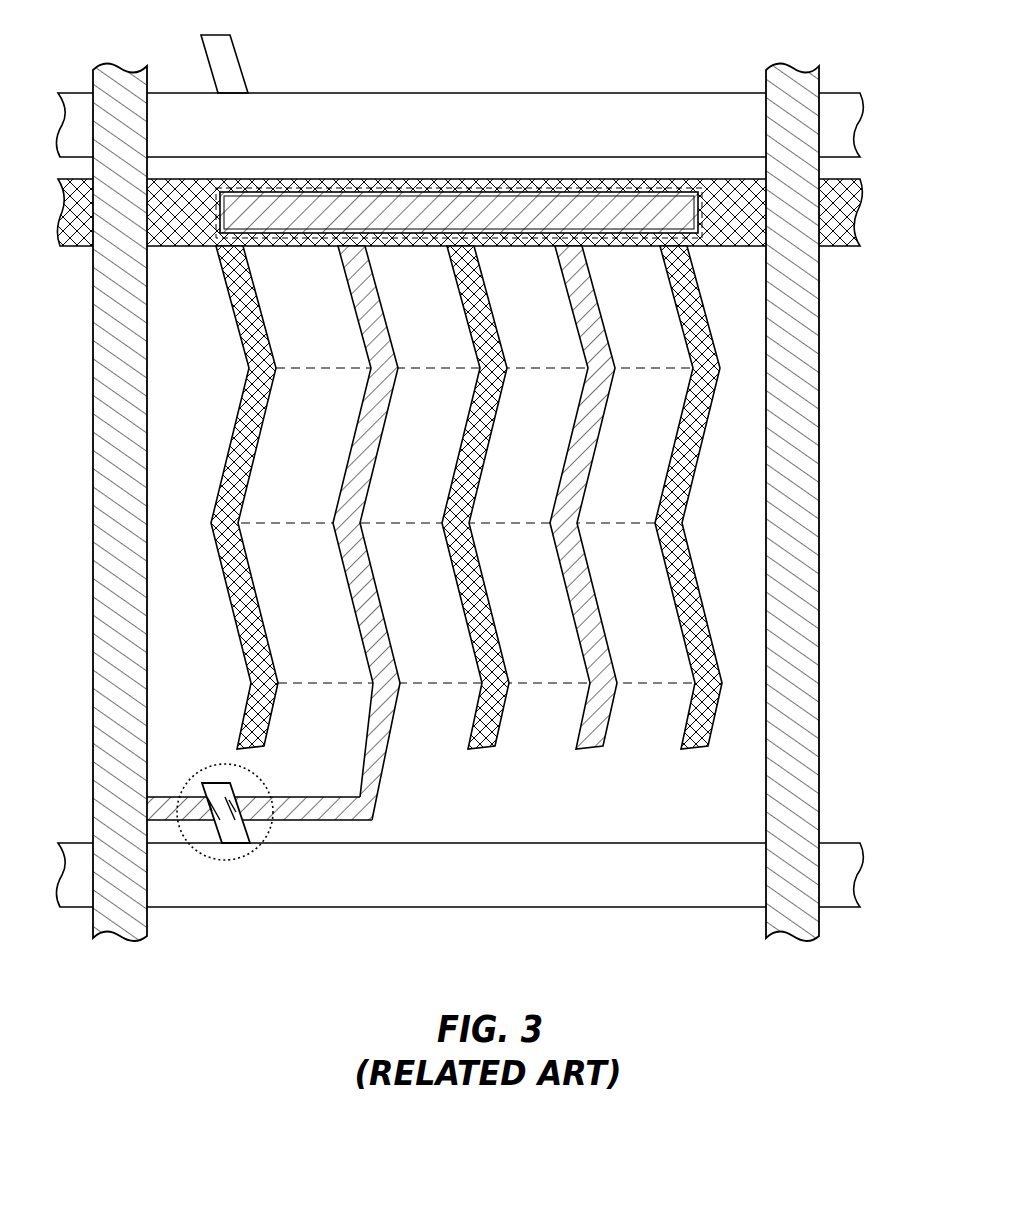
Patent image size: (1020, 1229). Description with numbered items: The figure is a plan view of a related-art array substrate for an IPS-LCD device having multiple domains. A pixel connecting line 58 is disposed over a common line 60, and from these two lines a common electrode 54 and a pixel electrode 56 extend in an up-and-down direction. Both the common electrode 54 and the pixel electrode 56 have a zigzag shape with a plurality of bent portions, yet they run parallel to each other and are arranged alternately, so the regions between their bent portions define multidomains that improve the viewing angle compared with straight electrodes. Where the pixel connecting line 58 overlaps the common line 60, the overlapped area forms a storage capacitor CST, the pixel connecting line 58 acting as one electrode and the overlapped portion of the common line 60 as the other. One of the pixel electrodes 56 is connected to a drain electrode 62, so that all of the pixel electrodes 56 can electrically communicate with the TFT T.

The common electrode 54 is at (238, 470).
The pixel electrode 56 is at (365, 476).
The pixel connecting line 58 is at (510, 210).
The common line 60 is at (862, 216).
The drain electrode 62 is at (330, 812).
The storage capacitor CST is at (610, 182).
The TFT T is at (227, 860).